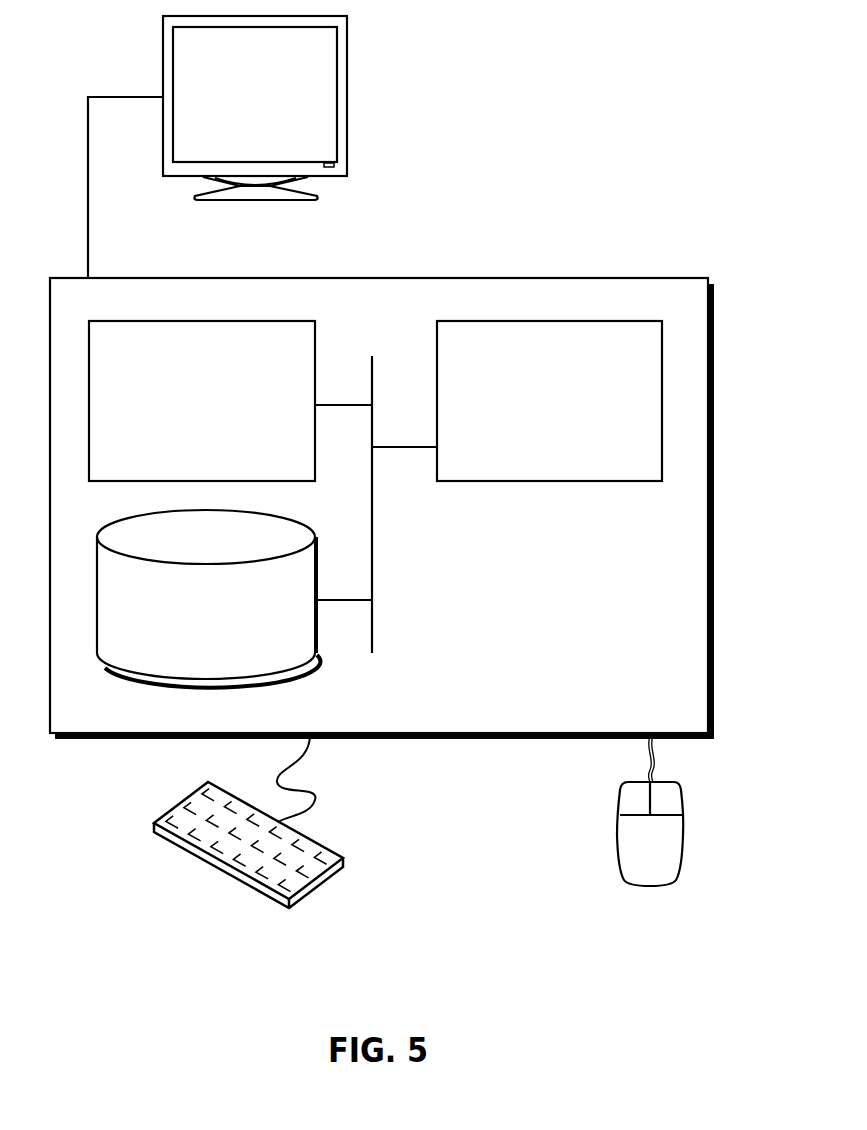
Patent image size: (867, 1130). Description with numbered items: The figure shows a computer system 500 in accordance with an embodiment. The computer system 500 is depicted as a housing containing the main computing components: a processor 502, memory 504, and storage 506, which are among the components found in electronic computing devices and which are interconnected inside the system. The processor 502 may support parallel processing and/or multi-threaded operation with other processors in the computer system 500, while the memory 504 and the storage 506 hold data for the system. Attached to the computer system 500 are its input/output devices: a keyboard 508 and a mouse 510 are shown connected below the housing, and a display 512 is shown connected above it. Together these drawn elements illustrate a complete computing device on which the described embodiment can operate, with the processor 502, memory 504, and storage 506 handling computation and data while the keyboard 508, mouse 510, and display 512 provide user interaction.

The computer system 500 is at (426, 247).
The processor 502 is at (531, 414).
The memory 504 is at (182, 413).
The storage 506 is at (187, 624).
The keyboard 508 is at (172, 842).
The mouse 510 is at (629, 856).
The display 512 is at (217, 146).